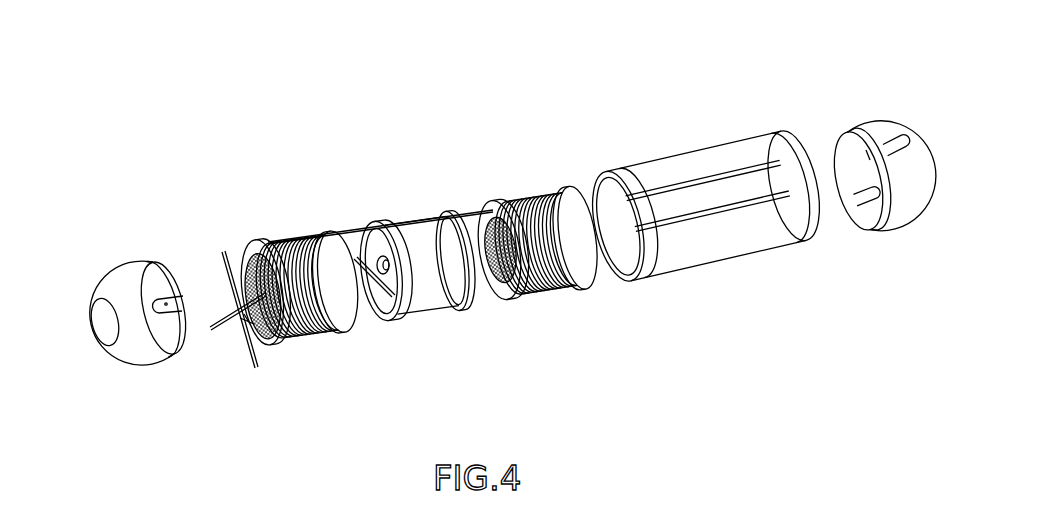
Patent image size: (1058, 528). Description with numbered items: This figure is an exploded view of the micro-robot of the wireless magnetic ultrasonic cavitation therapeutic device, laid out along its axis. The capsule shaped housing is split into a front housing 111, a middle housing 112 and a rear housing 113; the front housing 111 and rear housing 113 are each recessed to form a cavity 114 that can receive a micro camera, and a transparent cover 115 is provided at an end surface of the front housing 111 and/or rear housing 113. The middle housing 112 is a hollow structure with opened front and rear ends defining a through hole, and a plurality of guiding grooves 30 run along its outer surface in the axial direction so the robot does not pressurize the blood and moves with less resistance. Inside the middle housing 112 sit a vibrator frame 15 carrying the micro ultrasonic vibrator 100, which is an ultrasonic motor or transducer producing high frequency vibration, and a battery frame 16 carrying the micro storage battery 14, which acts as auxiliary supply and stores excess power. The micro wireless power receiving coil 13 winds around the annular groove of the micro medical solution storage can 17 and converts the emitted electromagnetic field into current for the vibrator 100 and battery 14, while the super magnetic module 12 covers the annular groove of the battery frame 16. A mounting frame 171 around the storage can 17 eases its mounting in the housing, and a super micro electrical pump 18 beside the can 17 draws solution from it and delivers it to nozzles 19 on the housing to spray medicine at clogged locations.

The micro ultrasonic vibrator 100 is at (380, 267).
The front housing 111 is at (116, 270).
The middle housing 112 is at (697, 152).
The rear housing 113 is at (903, 130).
The cavity 114 is at (868, 155).
The transparent cover 115 is at (107, 337).
The super magnetic module 12 is at (555, 297).
The micro wireless power receiving coil 13 is at (307, 337).
The micro storage battery 14 is at (489, 308).
The vibrator frame 15 is at (386, 323).
The battery frame 16 is at (517, 303).
The micro medical solution storage can 17 is at (262, 292).
The mounting frame 171 is at (276, 342).
The super micro electrical pump 18 is at (242, 318).
The nozzles 19 is at (167, 302).
The guiding grooves 30 is at (712, 262).